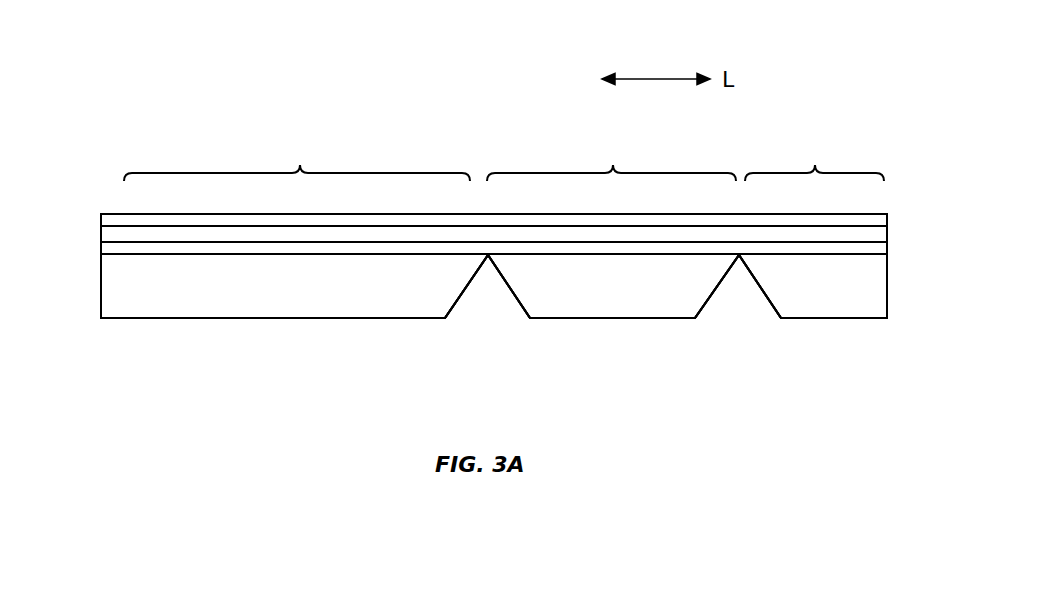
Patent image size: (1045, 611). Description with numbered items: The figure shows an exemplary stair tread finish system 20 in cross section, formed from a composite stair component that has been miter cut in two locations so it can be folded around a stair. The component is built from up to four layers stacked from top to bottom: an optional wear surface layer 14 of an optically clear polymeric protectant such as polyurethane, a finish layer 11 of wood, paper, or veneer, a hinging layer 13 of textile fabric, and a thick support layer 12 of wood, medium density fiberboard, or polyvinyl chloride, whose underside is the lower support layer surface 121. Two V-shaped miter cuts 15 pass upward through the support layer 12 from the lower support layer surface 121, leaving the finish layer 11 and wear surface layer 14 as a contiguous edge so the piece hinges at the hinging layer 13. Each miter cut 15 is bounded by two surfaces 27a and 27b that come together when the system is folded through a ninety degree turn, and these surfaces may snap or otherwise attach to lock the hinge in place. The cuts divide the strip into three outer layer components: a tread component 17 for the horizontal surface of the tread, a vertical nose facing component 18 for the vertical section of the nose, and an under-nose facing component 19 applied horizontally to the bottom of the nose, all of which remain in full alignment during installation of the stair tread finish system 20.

The stair tread finish system 20 is at (176, 123).
The wear surface layer 14 is at (121, 214).
The finish layer 11 is at (101, 234).
The hinging layer 13 is at (102, 251).
The support layer 12 is at (107, 296).
The lower support layer surface 121 is at (866, 318).
The miter cut 15 is at (485, 289).
The first hinge surface 27a is at (463, 297).
The second hinge surface 27b is at (511, 295).
The tread component 17 is at (297, 160).
The vertical nose facing component 18 is at (611, 160).
The under-nose facing component 19 is at (814, 160).